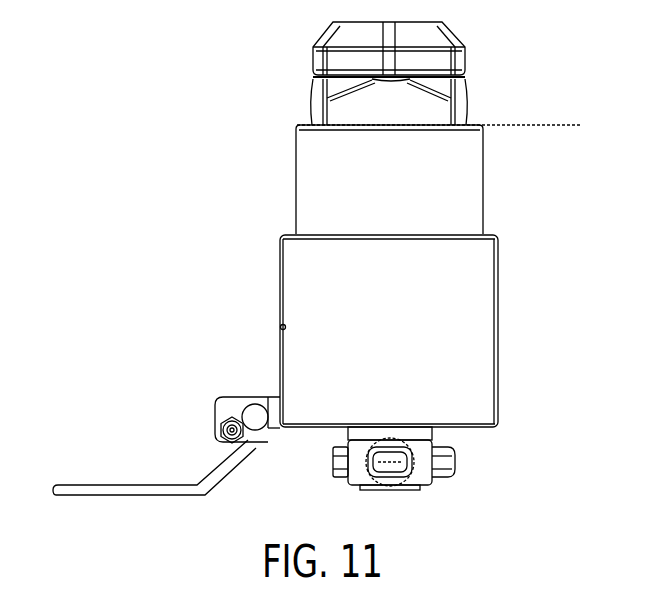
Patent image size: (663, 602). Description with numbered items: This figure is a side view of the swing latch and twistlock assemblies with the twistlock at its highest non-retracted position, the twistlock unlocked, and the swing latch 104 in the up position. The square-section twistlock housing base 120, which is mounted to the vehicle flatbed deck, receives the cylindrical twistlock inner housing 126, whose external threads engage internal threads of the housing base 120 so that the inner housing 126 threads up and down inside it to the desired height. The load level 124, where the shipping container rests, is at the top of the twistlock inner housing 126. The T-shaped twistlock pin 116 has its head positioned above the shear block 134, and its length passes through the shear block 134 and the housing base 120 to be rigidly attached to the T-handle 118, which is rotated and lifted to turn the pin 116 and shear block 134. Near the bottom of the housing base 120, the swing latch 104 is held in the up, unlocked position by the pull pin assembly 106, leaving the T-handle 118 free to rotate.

The swing latch 104 is at (107, 485).
The pull pin assembly 106 is at (198, 428).
The twistlock pin 116 is at (455, 37).
The T-handle 118 is at (410, 462).
The twistlock housing base 120 is at (498, 313).
The load level 124 is at (562, 124).
The twistlock inner housing 126 is at (296, 180).
The shear block 134 is at (463, 107).